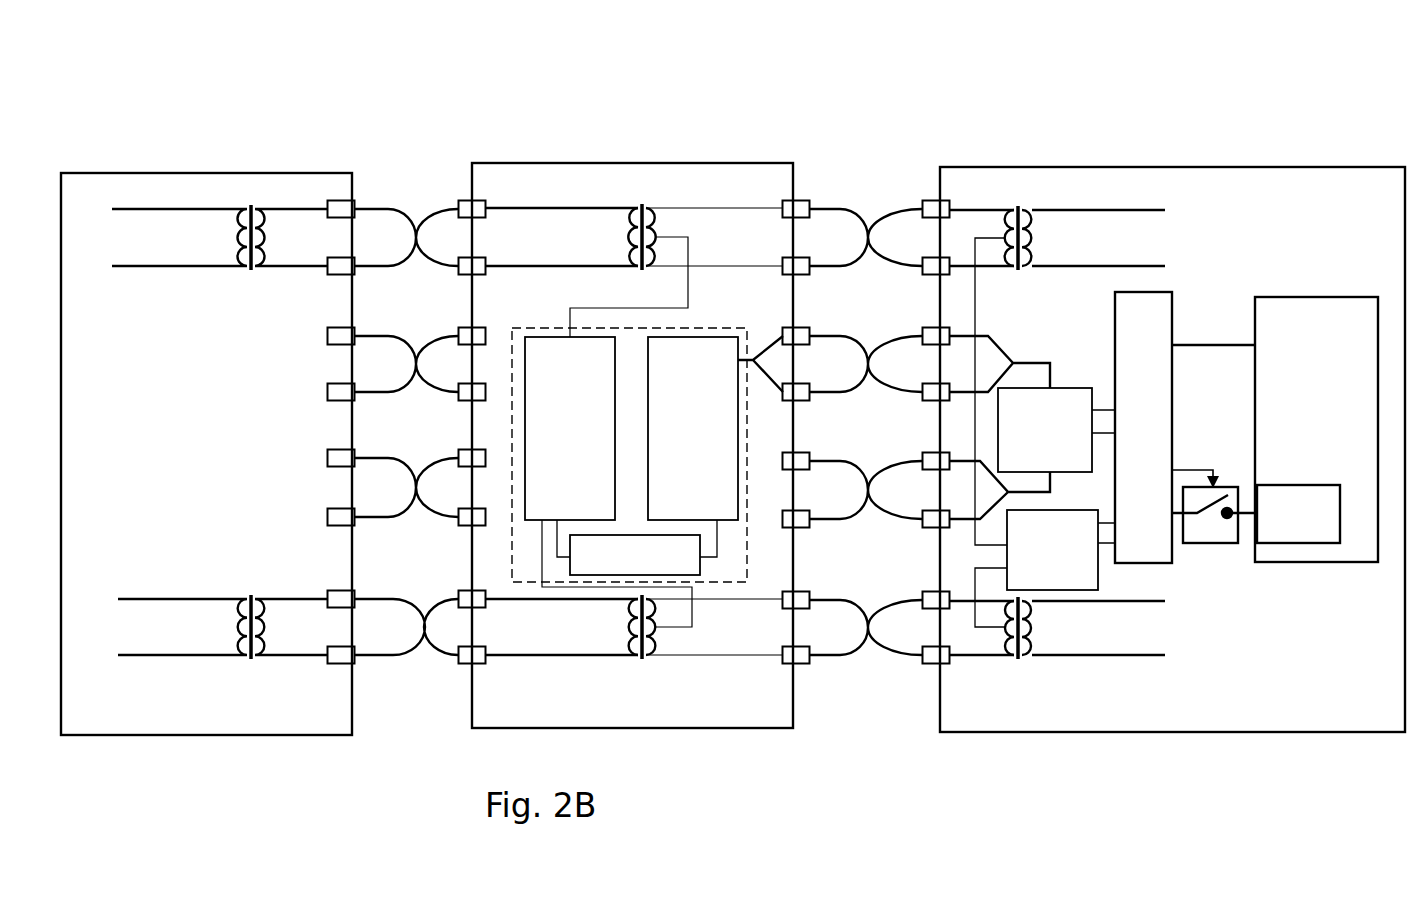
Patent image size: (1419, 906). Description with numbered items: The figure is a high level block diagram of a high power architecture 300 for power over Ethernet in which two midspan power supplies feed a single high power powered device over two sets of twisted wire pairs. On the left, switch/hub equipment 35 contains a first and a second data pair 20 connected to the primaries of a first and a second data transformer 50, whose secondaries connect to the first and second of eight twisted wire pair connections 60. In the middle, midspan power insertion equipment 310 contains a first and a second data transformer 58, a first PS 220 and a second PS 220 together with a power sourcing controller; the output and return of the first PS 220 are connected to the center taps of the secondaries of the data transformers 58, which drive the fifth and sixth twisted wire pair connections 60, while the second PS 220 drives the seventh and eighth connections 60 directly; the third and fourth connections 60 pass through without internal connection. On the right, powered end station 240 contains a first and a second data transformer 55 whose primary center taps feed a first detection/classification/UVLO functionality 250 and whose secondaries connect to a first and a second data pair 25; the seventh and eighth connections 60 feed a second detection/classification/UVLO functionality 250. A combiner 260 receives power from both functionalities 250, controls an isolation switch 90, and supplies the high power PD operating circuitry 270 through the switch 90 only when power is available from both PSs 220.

The high power architecture 300 is at (643, 42).
The midspan power insertion equipment 310 is at (632, 163).
The switch/hub equipment 35 is at (207, 735).
The data pair 20 is at (147, 266).
The data transformer 50 is at (252, 266).
The twisted wire pair connection 60 is at (403, 267).
The data transformer 58 is at (639, 270).
The PS 220 is at (557, 336).
The powered end station 240 is at (1170, 732).
The data pair 25 is at (1092, 210).
The data transformer 55 is at (1017, 210).
The detection/classification/UVLO functionality 250 is at (1086, 368).
The combiner 260 is at (1172, 313).
The isolation switch 90 is at (1215, 543).
The high power PD operating circuitry 270 is at (1318, 297).